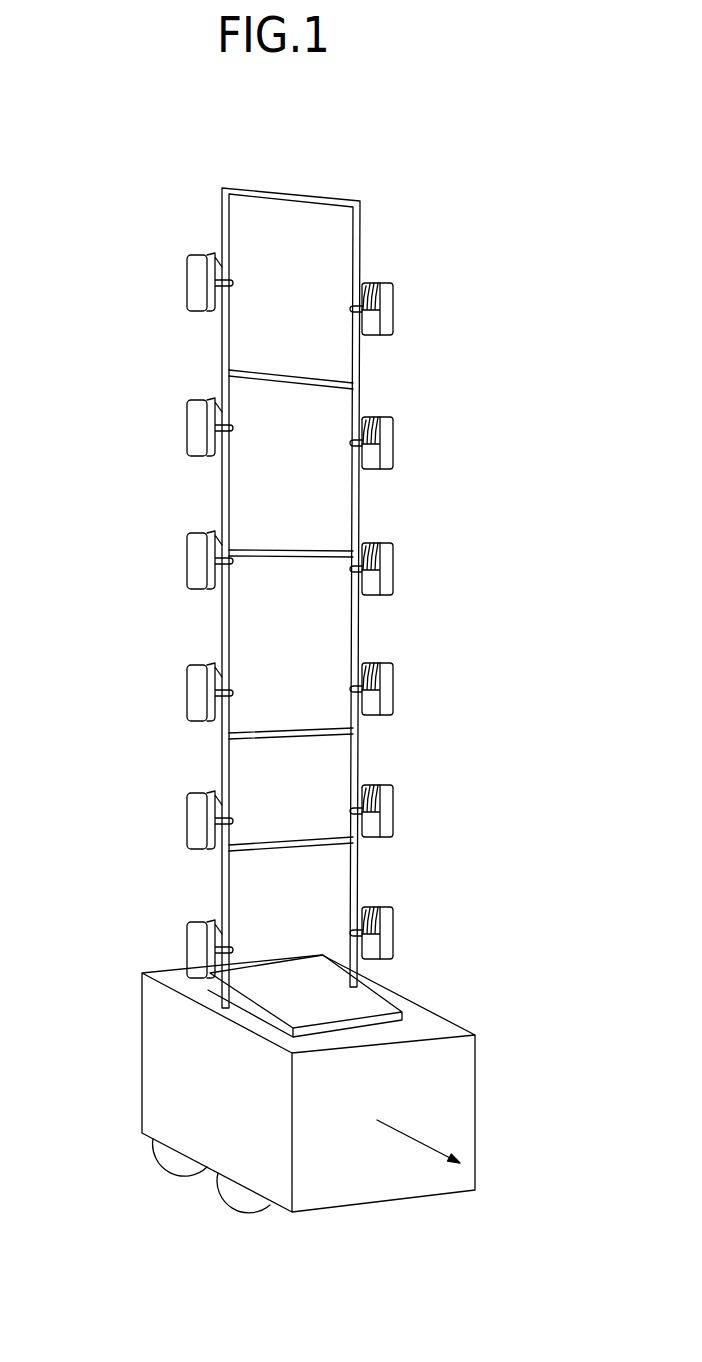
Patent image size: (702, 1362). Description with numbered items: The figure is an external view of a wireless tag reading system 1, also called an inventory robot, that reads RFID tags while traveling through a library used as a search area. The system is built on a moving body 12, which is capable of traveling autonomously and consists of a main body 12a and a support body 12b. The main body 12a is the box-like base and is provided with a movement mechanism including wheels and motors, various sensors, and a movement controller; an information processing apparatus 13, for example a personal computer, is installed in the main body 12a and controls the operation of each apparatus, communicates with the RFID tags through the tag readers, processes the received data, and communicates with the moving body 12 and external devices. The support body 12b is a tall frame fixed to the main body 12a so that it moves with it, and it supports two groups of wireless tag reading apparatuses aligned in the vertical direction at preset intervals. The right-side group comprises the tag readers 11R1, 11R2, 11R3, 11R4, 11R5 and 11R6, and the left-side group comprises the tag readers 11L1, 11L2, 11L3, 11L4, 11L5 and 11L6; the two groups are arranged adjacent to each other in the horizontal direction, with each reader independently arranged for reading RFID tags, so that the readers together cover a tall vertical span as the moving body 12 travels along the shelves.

The wireless tag reading system 1 is at (531, 525).
The moving body 12 is at (126, 1021).
The main body 12a is at (142, 1080).
The support body 12b is at (320, 198).
The information processing apparatus 13 is at (403, 1017).
The wireless tag reading apparatus 11R1 is at (187, 282).
The wireless tag reading apparatus 11R2 is at (187, 427).
The wireless tag reading apparatus 11R3 is at (187, 560).
The wireless tag reading apparatus 11R4 is at (187, 692).
The wireless tag reading apparatus 11R5 is at (187, 824).
The wireless tag reading apparatus 11R6 is at (187, 952).
The wireless tag reading apparatus 11L1 is at (396, 310).
The wireless tag reading apparatus 11L2 is at (396, 444).
The wireless tag reading apparatus 11L3 is at (396, 570).
The wireless tag reading apparatus 11L4 is at (396, 690).
The wireless tag reading apparatus 11L5 is at (396, 812).
The wireless tag reading apparatus 11L6 is at (396, 934).